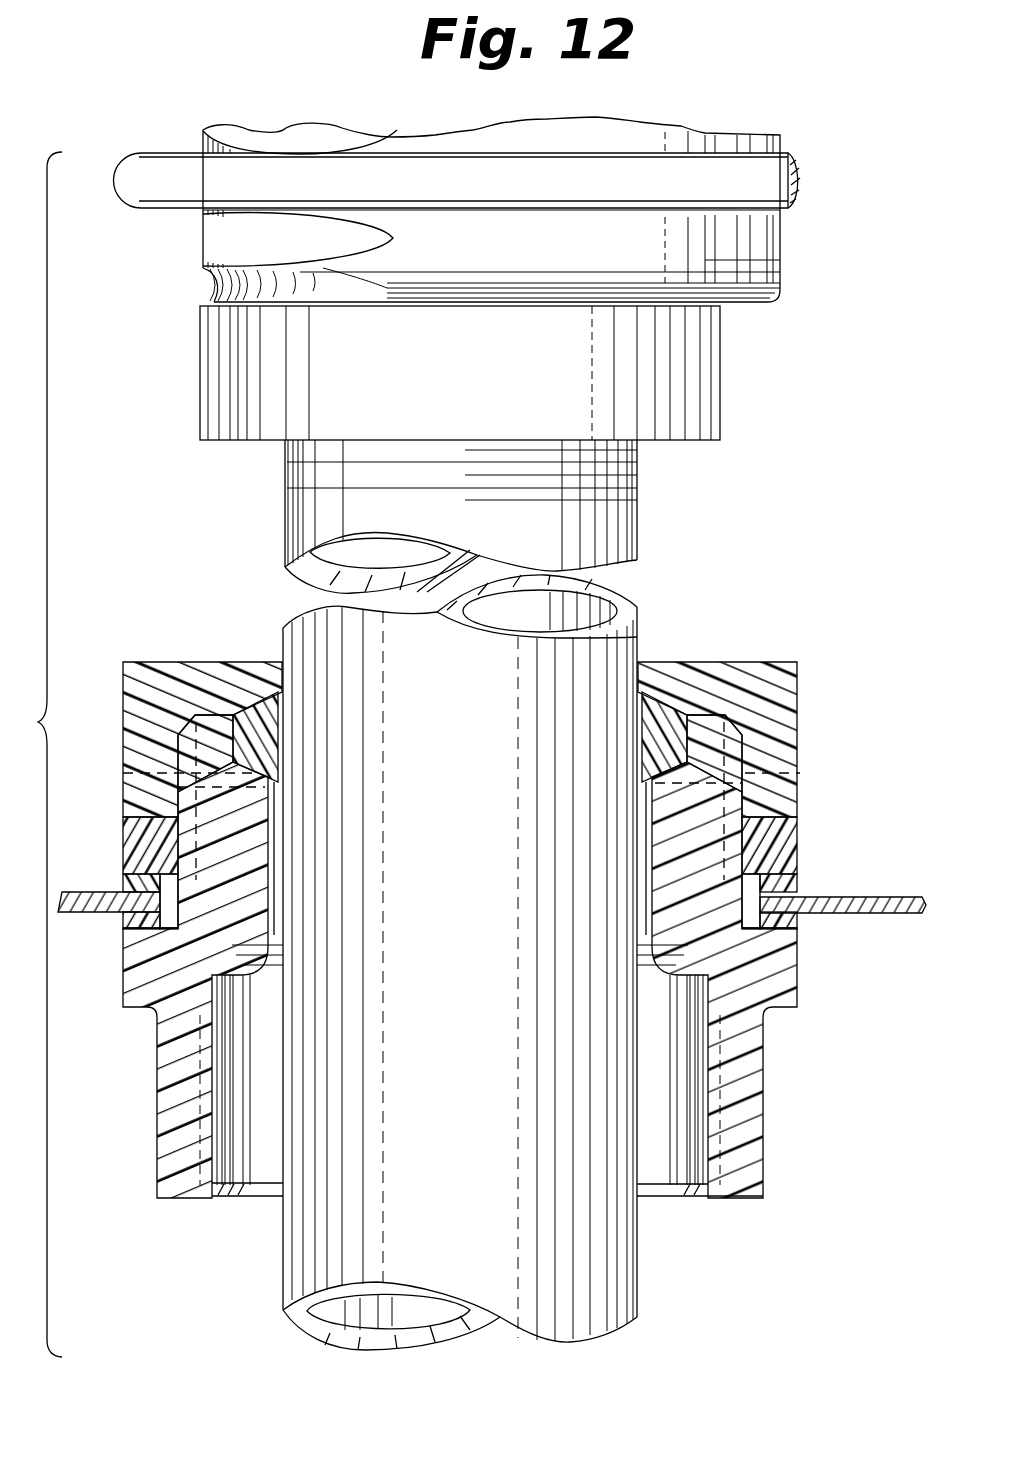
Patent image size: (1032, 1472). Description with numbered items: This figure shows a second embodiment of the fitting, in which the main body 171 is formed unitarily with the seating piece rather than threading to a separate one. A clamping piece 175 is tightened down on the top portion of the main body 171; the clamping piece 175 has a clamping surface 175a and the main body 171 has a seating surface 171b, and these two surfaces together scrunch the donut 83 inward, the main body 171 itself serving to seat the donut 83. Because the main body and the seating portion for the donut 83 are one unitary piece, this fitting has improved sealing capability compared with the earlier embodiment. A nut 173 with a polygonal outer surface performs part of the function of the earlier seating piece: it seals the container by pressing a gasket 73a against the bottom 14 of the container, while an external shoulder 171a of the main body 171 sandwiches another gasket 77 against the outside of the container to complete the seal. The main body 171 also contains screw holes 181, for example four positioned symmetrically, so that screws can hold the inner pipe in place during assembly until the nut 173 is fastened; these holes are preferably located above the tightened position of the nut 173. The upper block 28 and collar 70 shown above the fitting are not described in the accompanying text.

The connector block 28 is at (727, 392).
The collar 70 is at (640, 524).
The donut 83 is at (283, 737).
The clamping piece 175 is at (749, 667).
The clamping surface 175a is at (635, 727).
The screw holes 181 is at (118, 775).
The nut 173 is at (123, 830).
The gasket 73a is at (797, 871).
The gasket 77 is at (123, 926).
The bottom of the container 14 is at (843, 915).
The external shoulder 171a is at (123, 980).
The main body 171 is at (158, 1103).
The seating surface 171b is at (637, 768).